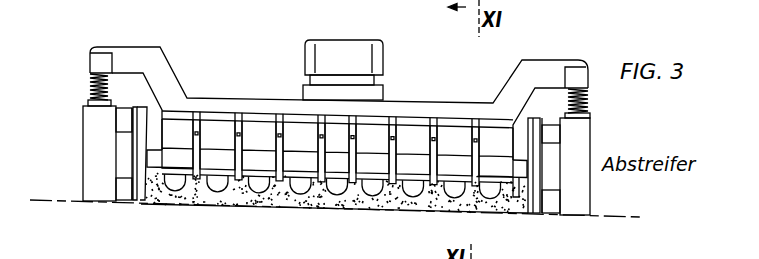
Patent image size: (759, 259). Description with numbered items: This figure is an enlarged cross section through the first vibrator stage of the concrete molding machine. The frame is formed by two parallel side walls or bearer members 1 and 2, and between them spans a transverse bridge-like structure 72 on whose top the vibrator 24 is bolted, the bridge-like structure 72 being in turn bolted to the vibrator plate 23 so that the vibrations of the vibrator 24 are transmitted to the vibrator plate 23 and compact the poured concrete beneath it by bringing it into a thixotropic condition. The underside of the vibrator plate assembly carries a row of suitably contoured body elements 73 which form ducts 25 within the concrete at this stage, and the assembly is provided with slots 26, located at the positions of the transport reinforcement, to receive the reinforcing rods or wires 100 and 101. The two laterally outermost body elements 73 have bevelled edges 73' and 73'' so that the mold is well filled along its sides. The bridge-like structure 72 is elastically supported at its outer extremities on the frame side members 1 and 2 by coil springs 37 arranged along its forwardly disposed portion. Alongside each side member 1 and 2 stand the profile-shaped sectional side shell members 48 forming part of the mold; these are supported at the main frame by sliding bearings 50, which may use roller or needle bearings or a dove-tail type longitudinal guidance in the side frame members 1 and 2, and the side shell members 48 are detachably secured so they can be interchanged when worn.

The side wall or bearer member 1 is at (88, 159).
The side wall or bearer member 2 is at (577, 204).
The vibrator plate 23 is at (250, 117).
The vibrator 24 is at (340, 48).
The duct 25 is at (176, 186).
The slot 26 is at (281, 180).
The coil spring 37 is at (583, 104).
The side shell member 48 is at (135, 201).
The sliding bearing 50 is at (118, 122).
The bridge-like structure 72 is at (418, 112).
The body element 73 is at (336, 183).
The bevelled edge 73' is at (152, 178).
The bevelled edge 73'' is at (513, 219).
The reinforcing rod or wire 100 is at (436, 126).
The reinforcing rod or wire 101 is at (344, 200).